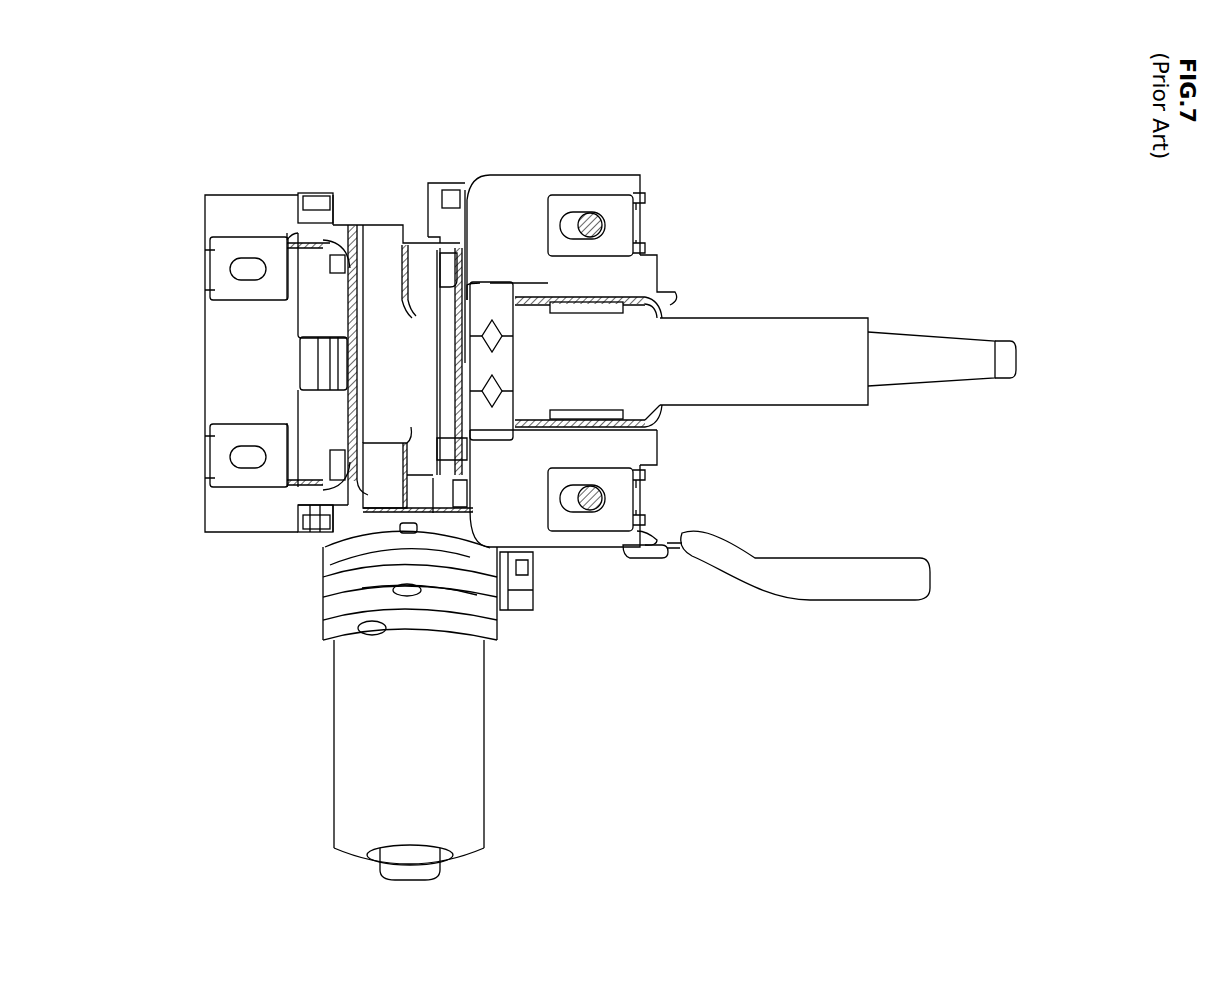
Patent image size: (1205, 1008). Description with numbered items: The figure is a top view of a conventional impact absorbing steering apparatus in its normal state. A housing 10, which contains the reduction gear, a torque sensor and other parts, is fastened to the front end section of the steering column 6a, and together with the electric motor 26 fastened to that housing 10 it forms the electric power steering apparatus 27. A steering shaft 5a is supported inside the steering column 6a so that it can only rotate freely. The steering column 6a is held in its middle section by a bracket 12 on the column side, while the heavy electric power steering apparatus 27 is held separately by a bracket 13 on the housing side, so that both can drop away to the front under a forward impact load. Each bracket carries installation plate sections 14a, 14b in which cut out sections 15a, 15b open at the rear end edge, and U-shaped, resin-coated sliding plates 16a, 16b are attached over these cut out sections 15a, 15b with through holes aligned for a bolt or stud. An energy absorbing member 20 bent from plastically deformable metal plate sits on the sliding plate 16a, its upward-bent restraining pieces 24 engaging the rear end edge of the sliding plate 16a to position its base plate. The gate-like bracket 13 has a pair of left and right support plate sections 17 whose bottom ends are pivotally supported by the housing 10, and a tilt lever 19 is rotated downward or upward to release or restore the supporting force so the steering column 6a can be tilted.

The steering shaft 5a is at (930, 380).
The steering column 6a is at (780, 340).
The housing 10 is at (380, 317).
The bracket on the column side 12 is at (534, 170).
The bracket on the housing side 13 is at (222, 205).
The installation plate section 14a is at (497, 200).
The installation plate section 14b is at (247, 210).
The cut out section 15a is at (645, 195).
The cut out section 15b is at (312, 205).
The sliding plate 16a is at (612, 205).
The sliding plate 16b is at (218, 250).
The support plate section 17 is at (325, 205).
The tilt lever 19 is at (850, 593).
The energy absorbing member 20 is at (640, 255).
The restraining piece 24 is at (640, 247).
The electric motor 26 is at (463, 798).
The electric power steering apparatus 27 is at (387, 363).